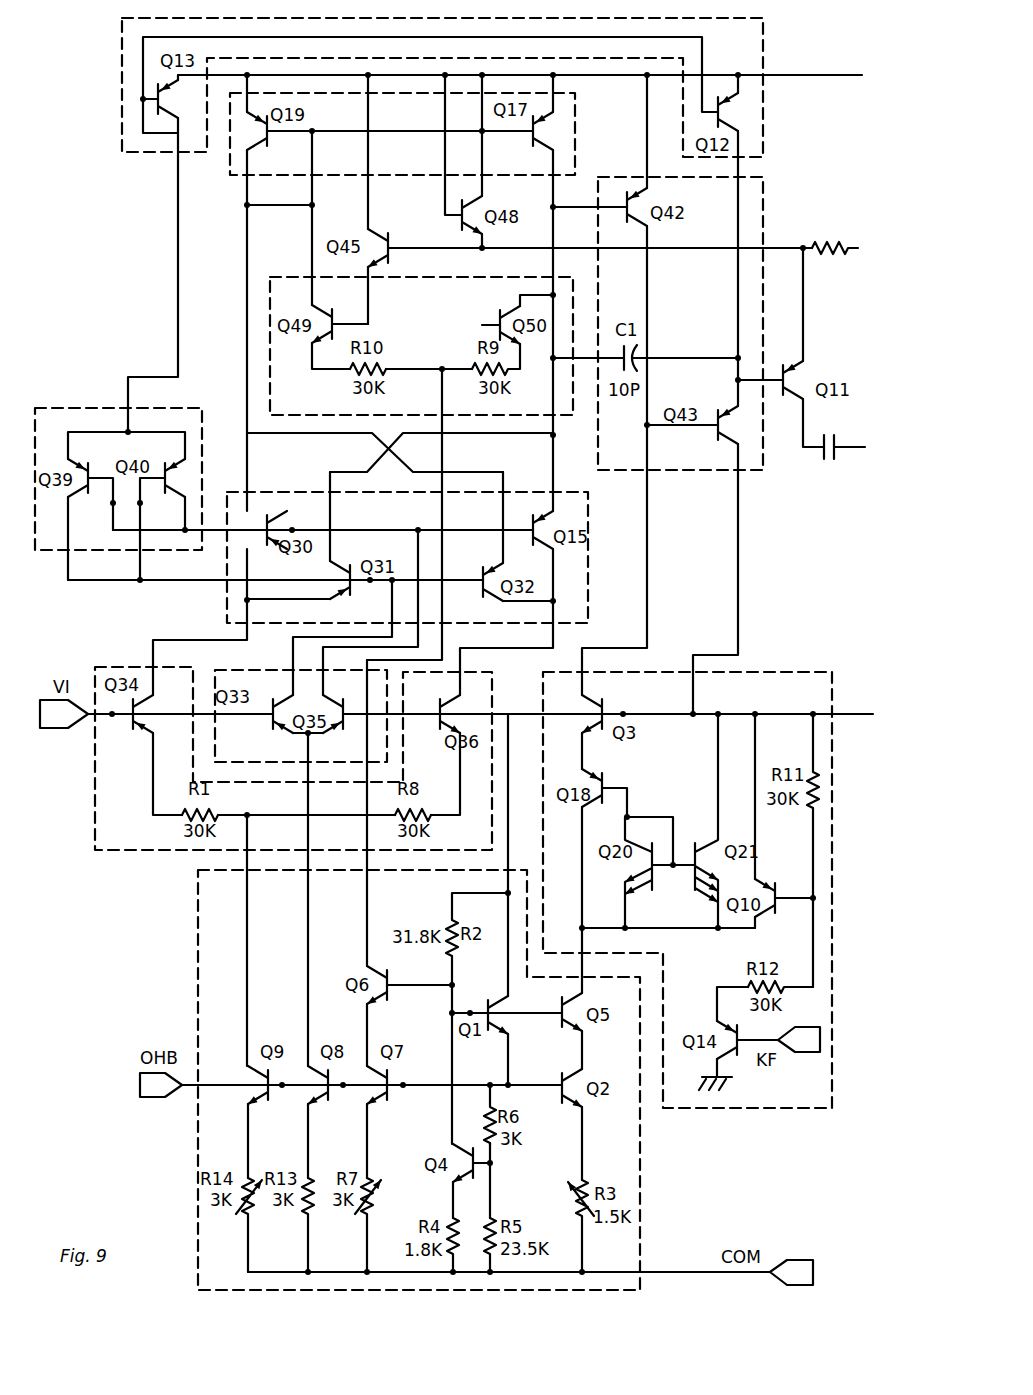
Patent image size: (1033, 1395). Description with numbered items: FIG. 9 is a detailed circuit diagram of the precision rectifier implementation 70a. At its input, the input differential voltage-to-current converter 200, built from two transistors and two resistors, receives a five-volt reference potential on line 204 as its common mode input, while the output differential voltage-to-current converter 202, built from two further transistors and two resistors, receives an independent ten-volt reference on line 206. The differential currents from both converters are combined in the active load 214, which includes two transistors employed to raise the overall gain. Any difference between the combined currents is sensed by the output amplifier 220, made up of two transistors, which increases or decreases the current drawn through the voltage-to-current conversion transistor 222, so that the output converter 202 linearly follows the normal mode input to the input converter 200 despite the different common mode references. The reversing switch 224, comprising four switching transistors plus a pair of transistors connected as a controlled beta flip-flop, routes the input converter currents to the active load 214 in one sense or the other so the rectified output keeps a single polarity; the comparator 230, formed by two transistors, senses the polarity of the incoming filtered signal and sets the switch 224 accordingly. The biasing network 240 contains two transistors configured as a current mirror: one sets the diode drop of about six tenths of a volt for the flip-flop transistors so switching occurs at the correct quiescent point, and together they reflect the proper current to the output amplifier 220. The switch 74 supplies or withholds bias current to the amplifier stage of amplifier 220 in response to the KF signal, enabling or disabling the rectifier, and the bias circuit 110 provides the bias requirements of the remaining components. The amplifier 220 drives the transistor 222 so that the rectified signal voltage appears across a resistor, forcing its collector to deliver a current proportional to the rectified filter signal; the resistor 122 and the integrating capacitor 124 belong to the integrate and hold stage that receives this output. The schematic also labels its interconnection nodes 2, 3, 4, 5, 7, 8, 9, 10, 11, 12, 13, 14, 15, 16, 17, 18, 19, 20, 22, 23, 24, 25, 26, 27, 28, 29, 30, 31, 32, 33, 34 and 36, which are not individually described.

The node 2 line 2 is at (153, 275).
The node 3 line 3 is at (236, 330).
The node 4 line 4 is at (583, 225).
The node 5 line 5 is at (614, 460).
The node 7 line 7 is at (375, 295).
The node 8 line 8 is at (600, 251).
The node 9 line 9 is at (419, 503).
The system 10 is at (323, 601).
The node 11 line 11 is at (306, 899).
The microphone 12 is at (345, 637).
The node 13 line 13 is at (212, 622).
The microphone 14 is at (466, 705).
The node 15 line 15 is at (306, 929).
The node 16 line 16 is at (160, 774).
The node 17 line 17 is at (460, 774).
The node 18 line 18 is at (637, 826).
The node 19 line 19 is at (320, 355).
The node 20 line 20 is at (574, 357).
The node 22 line 22 is at (654, 900).
The node 23 line 23 is at (266, 1141).
The node 24 line 24 is at (326, 1141).
The node 25 line 25 is at (381, 1141).
The node 26 line 26 is at (799, 897).
The node 27 line 27 is at (433, 984).
The node 28 line 28 is at (569, 751).
The node 29 line 29 is at (503, 1180).
The node 30 line 30 is at (596, 1143).
The node 31 line 31 is at (441, 1200).
The node 32 line 32 is at (729, 268).
The node 33 line 33 is at (596, 1050).
The node 34 line 34 is at (722, 1004).
The node 36 line 36 is at (381, 1035).
The rectifier implementation 70a is at (133, 1203).
The switch 74 is at (768, 672).
The bias circuit 110 is at (198, 992).
The resistor 122 is at (833, 248).
The integrating capacitor 124 is at (832, 465).
The input differential V/I converter 200 is at (141, 855).
The output differential V/I converter 202 is at (272, 277).
The line 204 is at (845, 747).
The line 206 is at (795, 99).
The active load 214 is at (576, 129).
The output amplifier 220 is at (765, 212).
The transistor 222 is at (812, 368).
The reversing switch 224 is at (589, 582).
The comparator circuit 230 is at (243, 670).
The biasing network 240 is at (118, 56).